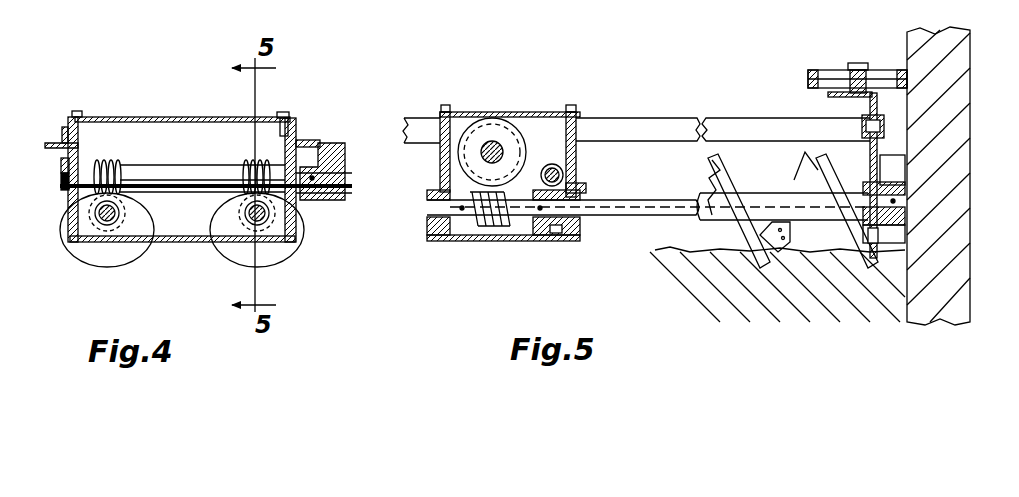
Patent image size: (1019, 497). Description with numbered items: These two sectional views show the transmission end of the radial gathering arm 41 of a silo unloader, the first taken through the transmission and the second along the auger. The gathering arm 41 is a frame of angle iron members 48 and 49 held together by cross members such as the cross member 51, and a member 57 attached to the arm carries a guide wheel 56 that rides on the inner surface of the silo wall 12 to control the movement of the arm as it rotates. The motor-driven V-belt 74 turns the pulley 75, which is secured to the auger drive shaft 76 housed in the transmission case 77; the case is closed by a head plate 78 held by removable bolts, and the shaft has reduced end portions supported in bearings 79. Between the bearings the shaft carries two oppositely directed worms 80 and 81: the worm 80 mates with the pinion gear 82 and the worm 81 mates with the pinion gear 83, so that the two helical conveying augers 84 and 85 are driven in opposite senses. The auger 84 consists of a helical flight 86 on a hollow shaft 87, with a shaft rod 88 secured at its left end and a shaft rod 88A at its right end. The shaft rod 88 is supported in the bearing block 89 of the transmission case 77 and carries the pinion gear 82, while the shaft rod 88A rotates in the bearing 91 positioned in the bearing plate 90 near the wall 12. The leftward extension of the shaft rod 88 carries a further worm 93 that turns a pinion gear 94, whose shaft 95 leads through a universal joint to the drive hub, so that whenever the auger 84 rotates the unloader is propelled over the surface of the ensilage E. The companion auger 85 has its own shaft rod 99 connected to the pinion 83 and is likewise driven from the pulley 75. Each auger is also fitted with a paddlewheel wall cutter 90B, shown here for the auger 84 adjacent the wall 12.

In FIG. 5, the wall 12 is at (935, 52).
In FIG. 5, the radial gathering arm 41 is at (672, 116).
In FIG. 4, the angle iron member 48 is at (308, 140).
In FIG. 4, the angle iron member 49 is at (50, 143).
In FIG. 5, the angle iron member 49 is at (733, 118).
In FIG. 5, the cross member 51 is at (890, 110).
In FIG. 5, the guide wheel 56 is at (820, 70).
In FIG. 5, the member 57 is at (828, 95).
In FIG. 4, the V-belt 74 is at (330, 143).
In FIG. 4, the pulley 75 is at (345, 160).
In FIG. 4, the auger drive shaft 76 is at (208, 170).
In FIG. 5, the auger drive shaft 76 is at (562, 176).
In FIG. 4, the transmission case 77 is at (300, 232).
In FIG. 5, the transmission case 77 is at (470, 241).
In FIG. 4, the head plate 78 is at (145, 118).
In FIG. 5, the head plate 78 is at (468, 112).
In FIG. 4, the bearing 79 is at (61, 168).
In FIG. 4, the worm 80 is at (248, 160).
In FIG. 5, the worm 80 is at (553, 162).
In FIG. 4, the worm 81 is at (110, 160).
In FIG. 4, the pinion gear 82 is at (250, 222).
In FIG. 5, the pinion gear 82 is at (556, 235).
In FIG. 4, the pinion gear 83 is at (100, 222).
In FIG. 4, the helical conveying auger 84 is at (284, 252).
In FIG. 5, the helical conveying auger 84 is at (748, 232).
In FIG. 4, the helical conveying auger 85 is at (115, 258).
In FIG. 5, the helical flight 86 is at (812, 160).
In FIG. 5, the hollow shaft 87 is at (765, 193).
In FIG. 5, the shaft rod 88 is at (632, 216).
In FIG. 5, the shaft rod 88A is at (895, 200).
In FIG. 5, the bearing block 89 is at (580, 186).
In FIG. 5, the bearing plate 90 is at (870, 150).
In FIG. 5, the paddlewheel wall cutter 90B is at (900, 170).
In FIG. 5, the bearing 91 is at (790, 232).
In FIG. 5, the worm 93 is at (505, 228).
In FIG. 5, the pinion gear 94 is at (496, 130).
In FIG. 5, the shaft 95 is at (485, 158).
In FIG. 4, the shaft rod 99 is at (97, 214).
In FIG. 5, the ensilage E is at (842, 312).